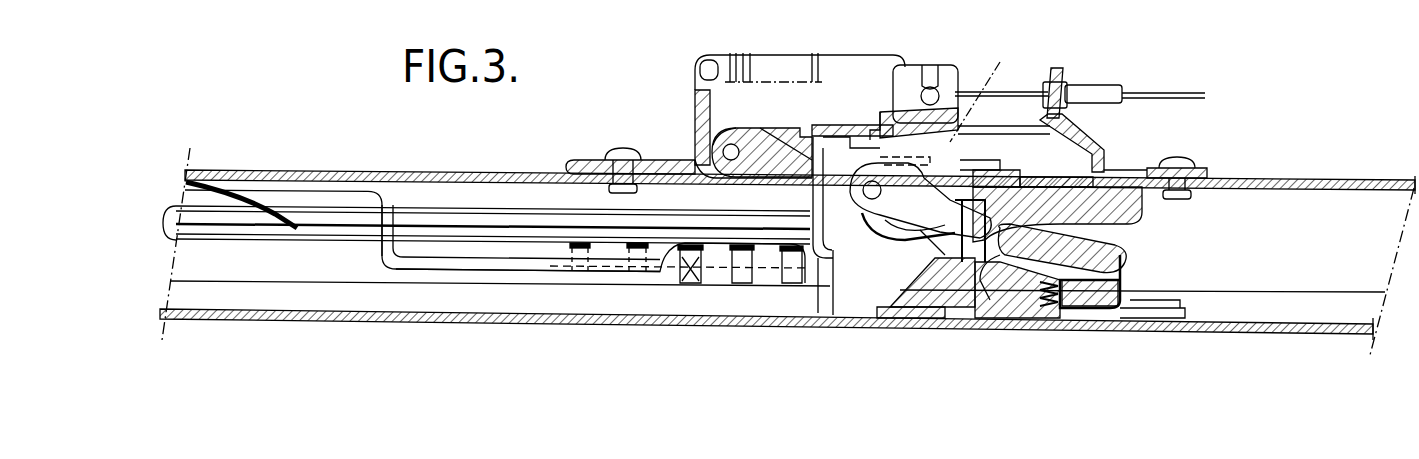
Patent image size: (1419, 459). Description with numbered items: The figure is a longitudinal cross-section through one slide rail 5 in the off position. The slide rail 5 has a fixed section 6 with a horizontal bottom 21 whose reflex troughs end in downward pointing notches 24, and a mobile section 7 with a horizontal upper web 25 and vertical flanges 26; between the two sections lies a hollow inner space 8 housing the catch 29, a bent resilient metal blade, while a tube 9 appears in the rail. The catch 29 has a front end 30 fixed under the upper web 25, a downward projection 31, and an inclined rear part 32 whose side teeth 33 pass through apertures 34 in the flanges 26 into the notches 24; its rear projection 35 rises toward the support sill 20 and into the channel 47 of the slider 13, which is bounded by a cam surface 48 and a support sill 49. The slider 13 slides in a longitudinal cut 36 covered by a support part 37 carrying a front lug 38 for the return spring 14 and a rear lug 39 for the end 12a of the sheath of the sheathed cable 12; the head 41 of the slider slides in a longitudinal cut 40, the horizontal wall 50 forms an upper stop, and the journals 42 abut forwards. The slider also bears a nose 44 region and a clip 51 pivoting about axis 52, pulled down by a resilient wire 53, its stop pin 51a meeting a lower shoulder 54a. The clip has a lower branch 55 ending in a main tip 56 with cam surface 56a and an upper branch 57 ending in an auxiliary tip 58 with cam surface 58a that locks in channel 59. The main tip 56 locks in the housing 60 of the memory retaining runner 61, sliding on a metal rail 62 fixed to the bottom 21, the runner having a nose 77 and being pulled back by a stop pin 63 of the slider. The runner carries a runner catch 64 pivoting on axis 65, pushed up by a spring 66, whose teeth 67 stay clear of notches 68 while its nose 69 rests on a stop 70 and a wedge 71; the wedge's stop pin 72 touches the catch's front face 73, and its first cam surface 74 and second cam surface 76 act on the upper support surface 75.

The slide rail 5 is at (1368, 155).
The fixed section 6 is at (1303, 334).
The mobile section 7 is at (1335, 181).
The hollow inner space 8 is at (1318, 259).
The tube 9 is at (233, 218).
The sheathed cable 12 is at (1006, 92).
The end of the sheath 12a is at (1062, 88).
The slider 13 is at (958, 66).
The return spring 14 is at (860, 53).
The support sill 20 is at (843, 140).
The horizontal bottom 21 is at (1245, 328).
The notches 24 is at (690, 185).
The upper web 25 is at (1288, 178).
The vertical flanges 26 is at (833, 270).
The catch 29 is at (390, 260).
The front end 30 is at (298, 189).
The projection 31 is at (393, 228).
The rear part 32 is at (503, 264).
The side teeth 33 is at (794, 252).
The apertures 34 is at (690, 262).
The projection 35 is at (818, 272).
The longitudinal cut 36 is at (712, 142).
The support part 37 is at (1093, 144).
The front lug 38 is at (697, 102).
The rear lug 39 is at (1054, 70).
The longitudinal cut 40 is at (1037, 129).
The head 41 is at (931, 74).
The cylindrical journals 42 is at (753, 122).
The nose 44 is at (733, 144).
The channel 47 is at (778, 160).
The cam surface 48 is at (783, 158).
The support sill 49 is at (866, 168).
The horizontal wall 50 is at (823, 126).
The clip 51 is at (930, 245).
The stop pin 51a is at (922, 224).
The transverse horizontal axis 52 is at (880, 199).
The resilient metal wire 53 is at (950, 160).
The lower shoulder 54a is at (960, 94).
The lower branch 55 is at (950, 241).
The main tip 56 is at (968, 305).
The cam surface 56a is at (992, 305).
The upper branch 57 is at (962, 150).
The auxiliary tip 58 is at (1000, 173).
The cam surface 58a is at (1005, 186).
The channel 59 is at (1052, 184).
The housing 60 is at (955, 305).
The memory retaining runner 61 is at (1115, 320).
The metal rail 62 is at (1150, 316).
The stop pin 63 is at (935, 237).
The runner catch 64 is at (1070, 310).
The transverse horizontal axis 65 is at (1128, 273).
The spring 66 is at (1090, 310).
The teeth 67 is at (978, 305).
The notches 68 is at (915, 302).
The nose 69 is at (945, 302).
The stop 70 is at (930, 302).
The wedge 71 is at (1115, 215).
The stop pin 72 is at (1042, 308).
The front face 73 is at (1050, 308).
The first cam surface 74 is at (1112, 226).
The upper support surface 75 is at (1120, 270).
The second cam surface 76 is at (1125, 245).
The nose 77 is at (900, 308).